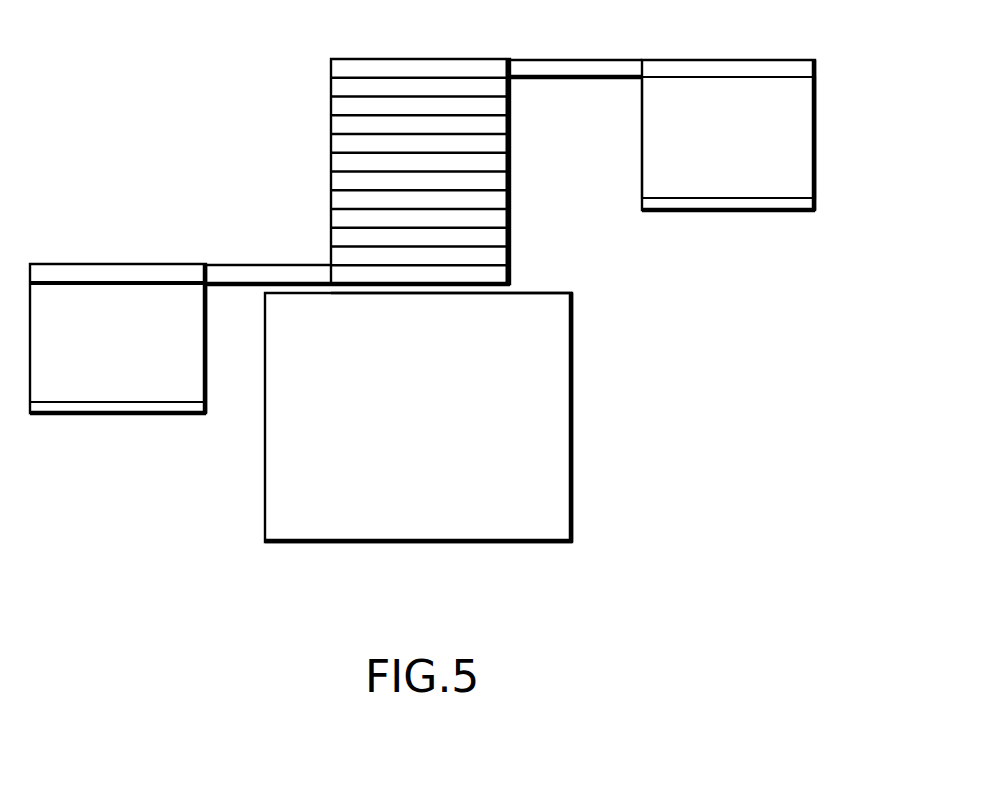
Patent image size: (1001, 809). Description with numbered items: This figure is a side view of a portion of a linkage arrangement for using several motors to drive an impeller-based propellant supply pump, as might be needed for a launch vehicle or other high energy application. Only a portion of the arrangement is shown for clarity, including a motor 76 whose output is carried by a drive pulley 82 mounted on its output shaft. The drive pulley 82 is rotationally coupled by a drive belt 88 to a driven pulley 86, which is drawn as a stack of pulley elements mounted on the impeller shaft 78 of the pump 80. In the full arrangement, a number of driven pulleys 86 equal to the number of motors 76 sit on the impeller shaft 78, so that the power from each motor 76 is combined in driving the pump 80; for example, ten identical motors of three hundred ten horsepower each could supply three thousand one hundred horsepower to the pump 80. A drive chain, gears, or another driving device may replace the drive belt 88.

The motor 76 is at (815, 112).
The impeller shaft 78 is at (450, 290).
The pump 80 is at (572, 463).
The drive pulley 82 is at (695, 58).
The driven pulley 86 is at (330, 160).
The drive belt 88 is at (558, 58).